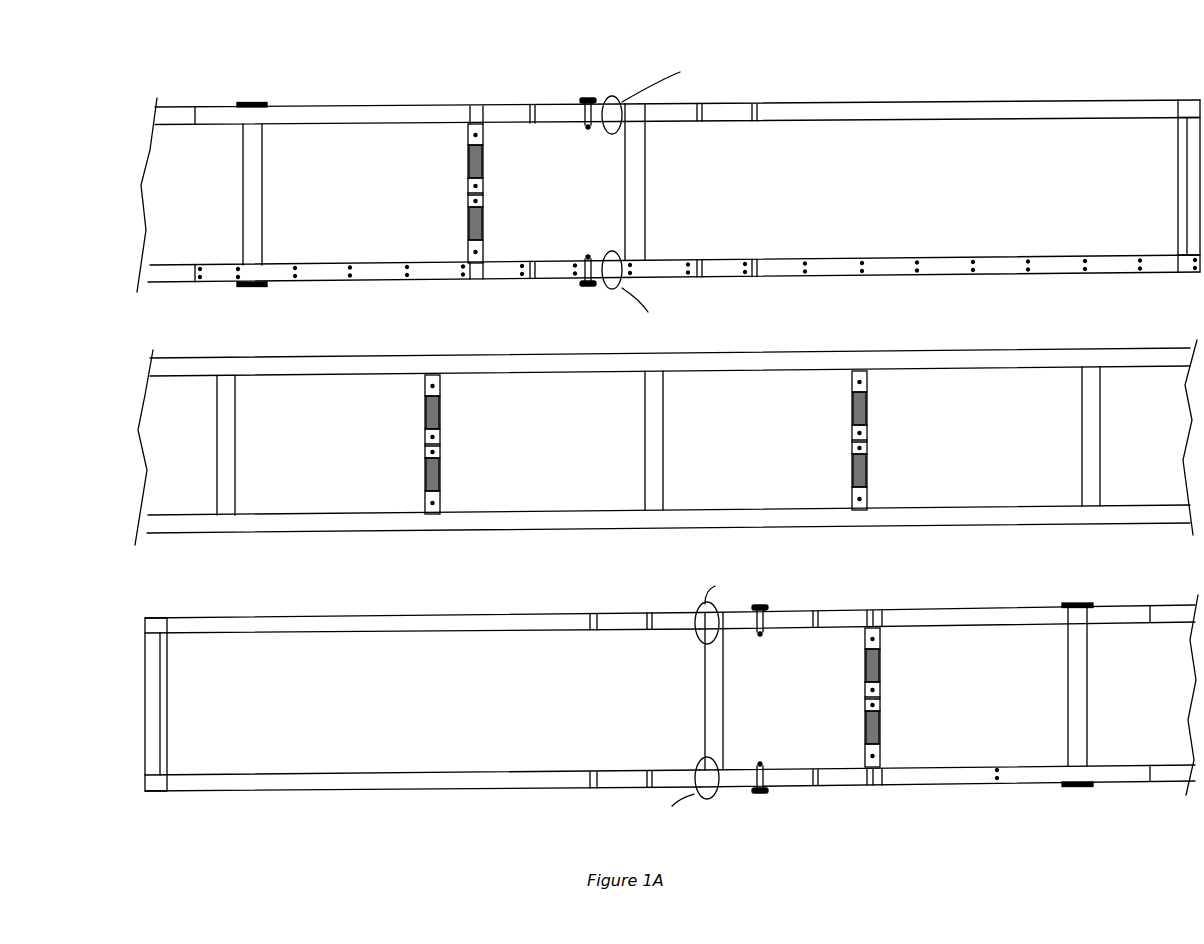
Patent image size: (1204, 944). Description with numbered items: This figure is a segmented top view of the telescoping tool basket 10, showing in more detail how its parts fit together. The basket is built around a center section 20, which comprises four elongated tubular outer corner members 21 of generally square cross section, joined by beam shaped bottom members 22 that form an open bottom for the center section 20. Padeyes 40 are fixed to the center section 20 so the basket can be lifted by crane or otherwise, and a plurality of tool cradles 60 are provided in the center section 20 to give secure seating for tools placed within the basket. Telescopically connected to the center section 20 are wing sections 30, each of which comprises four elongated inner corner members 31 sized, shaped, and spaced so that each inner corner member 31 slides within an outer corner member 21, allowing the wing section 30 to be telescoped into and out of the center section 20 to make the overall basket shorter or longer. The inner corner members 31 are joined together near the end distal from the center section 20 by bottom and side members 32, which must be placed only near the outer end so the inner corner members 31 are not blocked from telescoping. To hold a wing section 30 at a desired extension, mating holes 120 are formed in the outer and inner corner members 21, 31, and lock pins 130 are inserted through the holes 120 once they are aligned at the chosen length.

The telescoping tool basket 10 is at (772, 65).
The center section 20 is at (120, 317).
The outer corner member 21 is at (378, 112).
The bottom member 22 is at (258, 190).
The wing section 30 is at (918, 87).
The inner corner member 31 is at (980, 118).
The bottom and side members 32 is at (1190, 205).
The padeye 40 is at (252, 102).
The tool cradle 60 is at (483, 218).
The mating holes 120 is at (535, 104).
The lock pin 130 is at (596, 98).